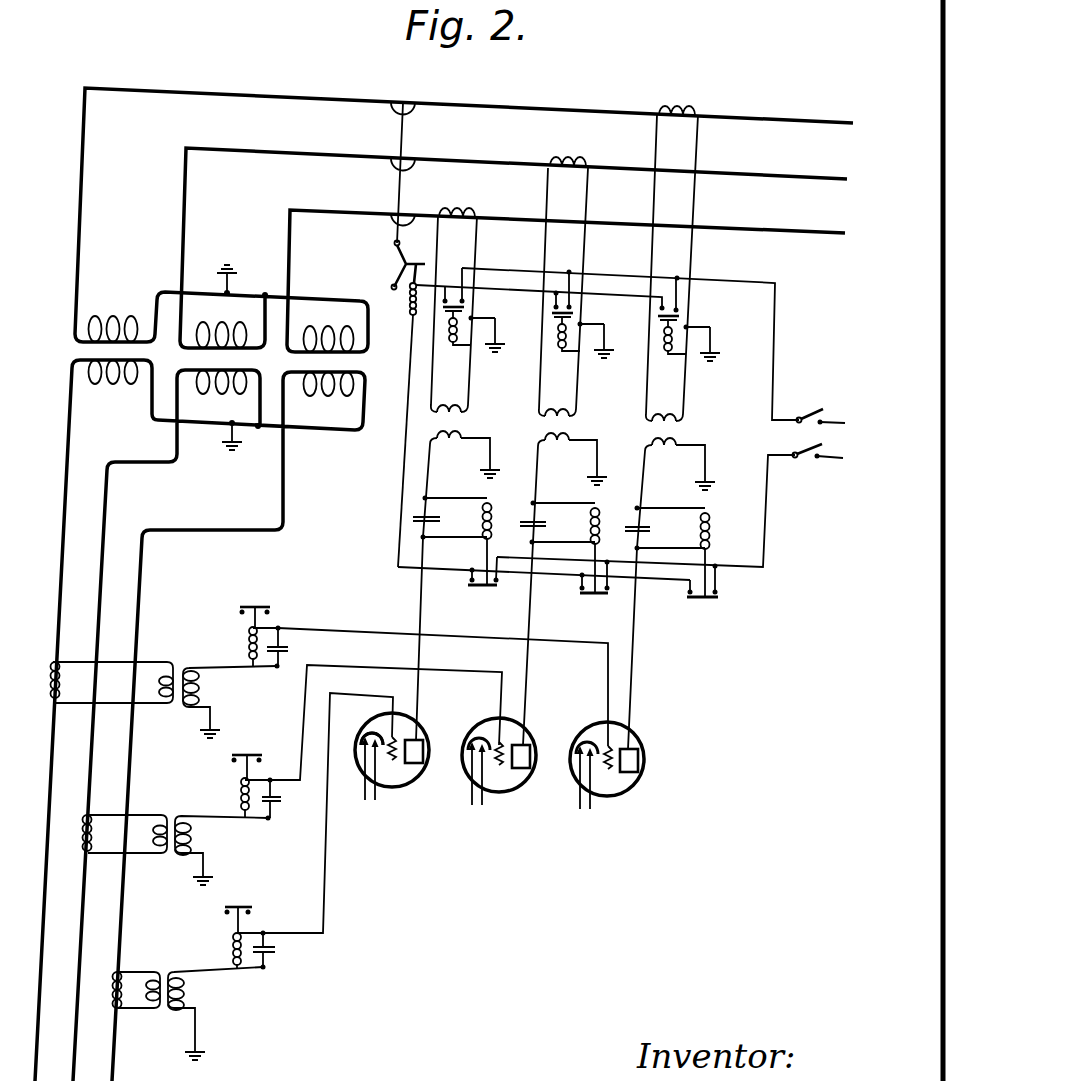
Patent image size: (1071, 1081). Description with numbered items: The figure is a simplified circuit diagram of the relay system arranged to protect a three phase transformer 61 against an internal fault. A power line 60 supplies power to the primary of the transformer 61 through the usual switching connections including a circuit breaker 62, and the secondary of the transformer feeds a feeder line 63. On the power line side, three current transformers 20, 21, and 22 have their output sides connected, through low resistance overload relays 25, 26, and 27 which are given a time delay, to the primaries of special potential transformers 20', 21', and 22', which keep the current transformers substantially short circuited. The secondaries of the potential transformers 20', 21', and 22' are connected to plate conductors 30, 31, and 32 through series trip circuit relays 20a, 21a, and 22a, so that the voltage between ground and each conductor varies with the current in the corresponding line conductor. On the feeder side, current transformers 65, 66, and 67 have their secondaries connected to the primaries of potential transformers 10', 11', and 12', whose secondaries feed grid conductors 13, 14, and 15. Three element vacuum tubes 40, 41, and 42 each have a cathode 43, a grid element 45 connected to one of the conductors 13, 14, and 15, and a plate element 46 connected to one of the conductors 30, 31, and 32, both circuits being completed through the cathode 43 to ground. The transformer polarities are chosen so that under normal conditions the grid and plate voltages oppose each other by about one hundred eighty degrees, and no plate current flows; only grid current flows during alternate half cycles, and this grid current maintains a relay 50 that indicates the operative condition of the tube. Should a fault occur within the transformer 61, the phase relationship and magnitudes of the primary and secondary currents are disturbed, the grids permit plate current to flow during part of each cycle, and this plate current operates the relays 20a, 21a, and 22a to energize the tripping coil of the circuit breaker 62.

The potential transformer 10' is at (165, 686).
The potential transformer 11' is at (184, 820).
The potential transformer 12' is at (196, 983).
The conductor 13 is at (342, 614).
The conductor 14 is at (360, 650).
The conductor 15 is at (356, 680).
The current transformer 20 is at (470, 197).
The current transformer 21 is at (577, 149).
The current transformer 22 is at (681, 94).
The special potential transformer 20' is at (470, 347).
The special potential transformer 21' is at (580, 326).
The special potential transformer 22' is at (687, 302).
The series trip circuit relay 20a is at (470, 512).
The series trip circuit relay 21a is at (582, 521).
The series trip circuit relay 22a is at (700, 532).
The low resistance overload relay 25 is at (451, 346).
The low resistance overload relay 26 is at (560, 352).
The low resistance overload relay 27 is at (667, 355).
The conductor 30 is at (428, 613).
The conductor 31 is at (538, 610).
The conductor 32 is at (648, 622).
The three element vacuum tube 40 is at (392, 754).
The three element vacuum tube 41 is at (509, 786).
The three element vacuum tube 42 is at (622, 796).
The cathode 43 is at (360, 728).
The grid element 45 is at (397, 730).
The plate element 46 is at (413, 743).
The relay 50 is at (250, 636).
The power line 60 is at (790, 113).
The three phase transformer 61 is at (141, 283).
The circuit breaker 62 is at (398, 182).
The feeder line 63 is at (123, 585).
The current transformer 65 is at (58, 656).
The current transformer 66 is at (91, 815).
The current transformer 67 is at (123, 966).